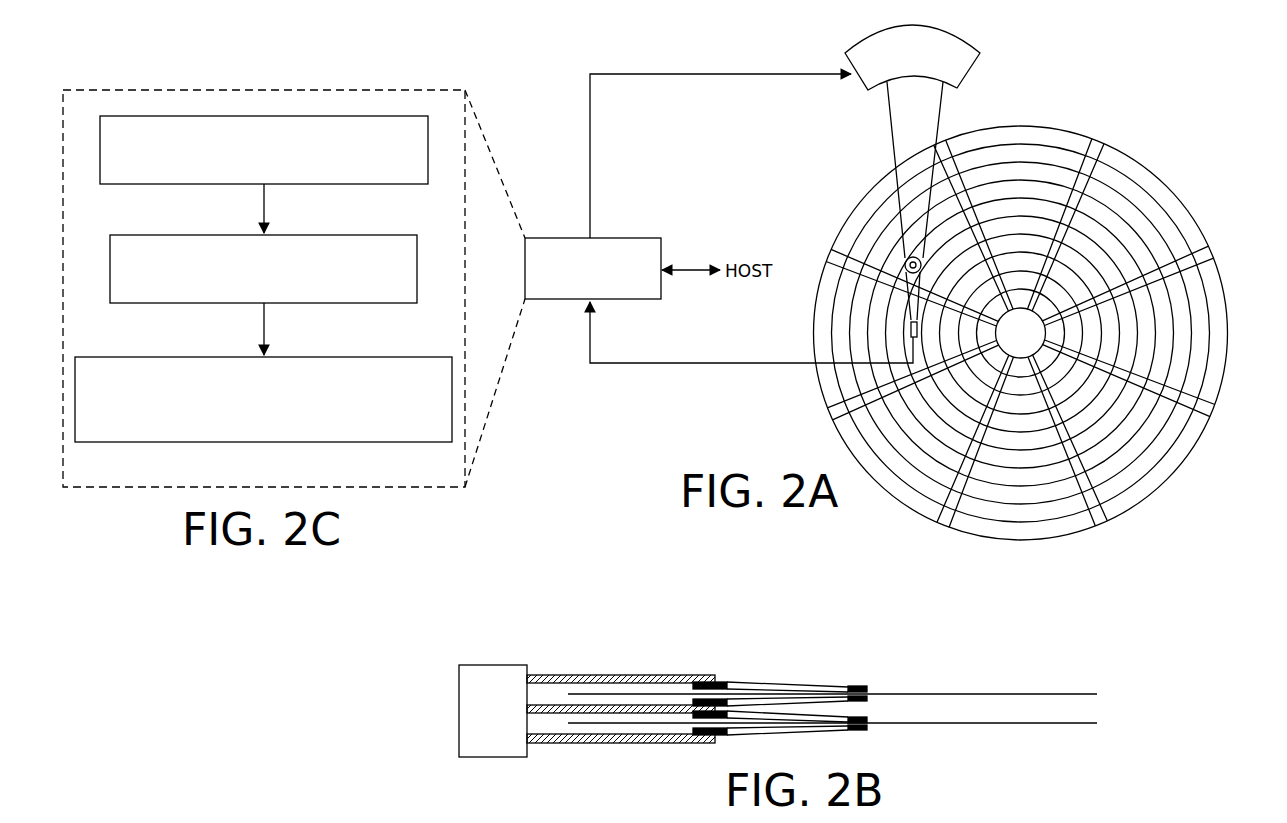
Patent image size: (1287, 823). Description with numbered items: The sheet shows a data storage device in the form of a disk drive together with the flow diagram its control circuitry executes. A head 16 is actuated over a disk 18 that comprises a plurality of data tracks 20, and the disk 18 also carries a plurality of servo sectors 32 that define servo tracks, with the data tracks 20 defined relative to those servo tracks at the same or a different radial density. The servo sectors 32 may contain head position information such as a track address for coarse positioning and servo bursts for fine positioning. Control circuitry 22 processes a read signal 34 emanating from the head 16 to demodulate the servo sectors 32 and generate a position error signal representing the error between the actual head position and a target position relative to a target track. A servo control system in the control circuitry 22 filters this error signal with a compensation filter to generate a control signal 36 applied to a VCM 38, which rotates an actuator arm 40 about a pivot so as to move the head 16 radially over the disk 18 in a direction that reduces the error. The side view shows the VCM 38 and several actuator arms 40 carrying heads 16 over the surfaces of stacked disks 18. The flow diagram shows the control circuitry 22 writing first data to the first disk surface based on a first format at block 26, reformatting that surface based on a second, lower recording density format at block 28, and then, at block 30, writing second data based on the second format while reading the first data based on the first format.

In FIG. 2A, the head 16 is at (905, 338).
In FIG. 2B, the head 16 is at (852, 683).
In FIG. 2A, the disk 18 is at (1165, 174).
In FIG. 2B, the disk 18 is at (1092, 687).
In FIG. 2A, the data tracks 20 is at (1012, 152).
In FIG. 2A, the control circuitry 22 is at (538, 300).
In FIG. 2C, the block 26 is at (380, 184).
In FIG. 2C, the block 28 is at (377, 303).
In FIG. 2C, the block 30 is at (378, 442).
In FIG. 2A, the servo sectors 32 is at (1102, 153).
In FIG. 2A, the read signal 34 is at (717, 364).
In FIG. 2A, the control signal 36 is at (590, 134).
In FIG. 2A, the VCM 38 is at (860, 82).
In FIG. 2B, the VCM 38 is at (493, 665).
In FIG. 2A, the actuator arm 40 is at (897, 148).
In FIG. 2B, the actuator arm 40 is at (603, 675).